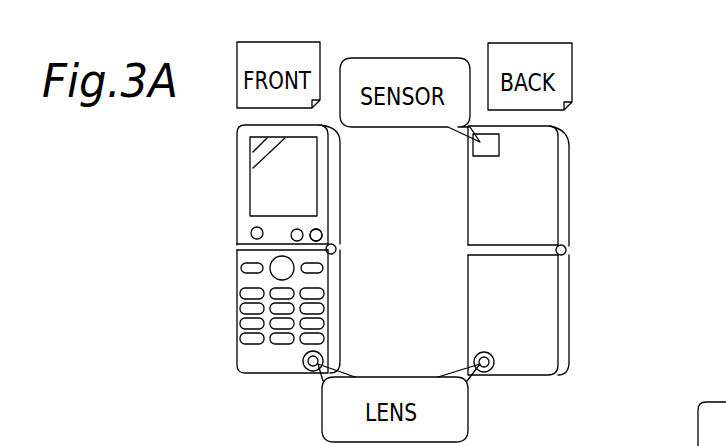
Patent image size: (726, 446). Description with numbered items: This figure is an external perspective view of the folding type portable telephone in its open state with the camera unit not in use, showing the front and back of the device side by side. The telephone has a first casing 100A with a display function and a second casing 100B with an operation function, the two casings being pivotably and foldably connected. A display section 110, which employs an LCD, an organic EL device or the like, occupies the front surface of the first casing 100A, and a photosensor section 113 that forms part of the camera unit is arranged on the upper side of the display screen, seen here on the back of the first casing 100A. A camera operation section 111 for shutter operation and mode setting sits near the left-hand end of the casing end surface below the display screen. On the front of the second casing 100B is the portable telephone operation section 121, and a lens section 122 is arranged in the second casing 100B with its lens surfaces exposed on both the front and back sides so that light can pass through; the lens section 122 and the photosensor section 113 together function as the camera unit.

The first casing 100A is at (574, 228).
The second casing 100B is at (574, 322).
The display section 110 is at (220, 135).
The camera operation section 111 is at (322, 238).
The photosensor section 113 is at (487, 137).
The portable telephone operation section 121 is at (220, 258).
The lens section 122 is at (490, 369).